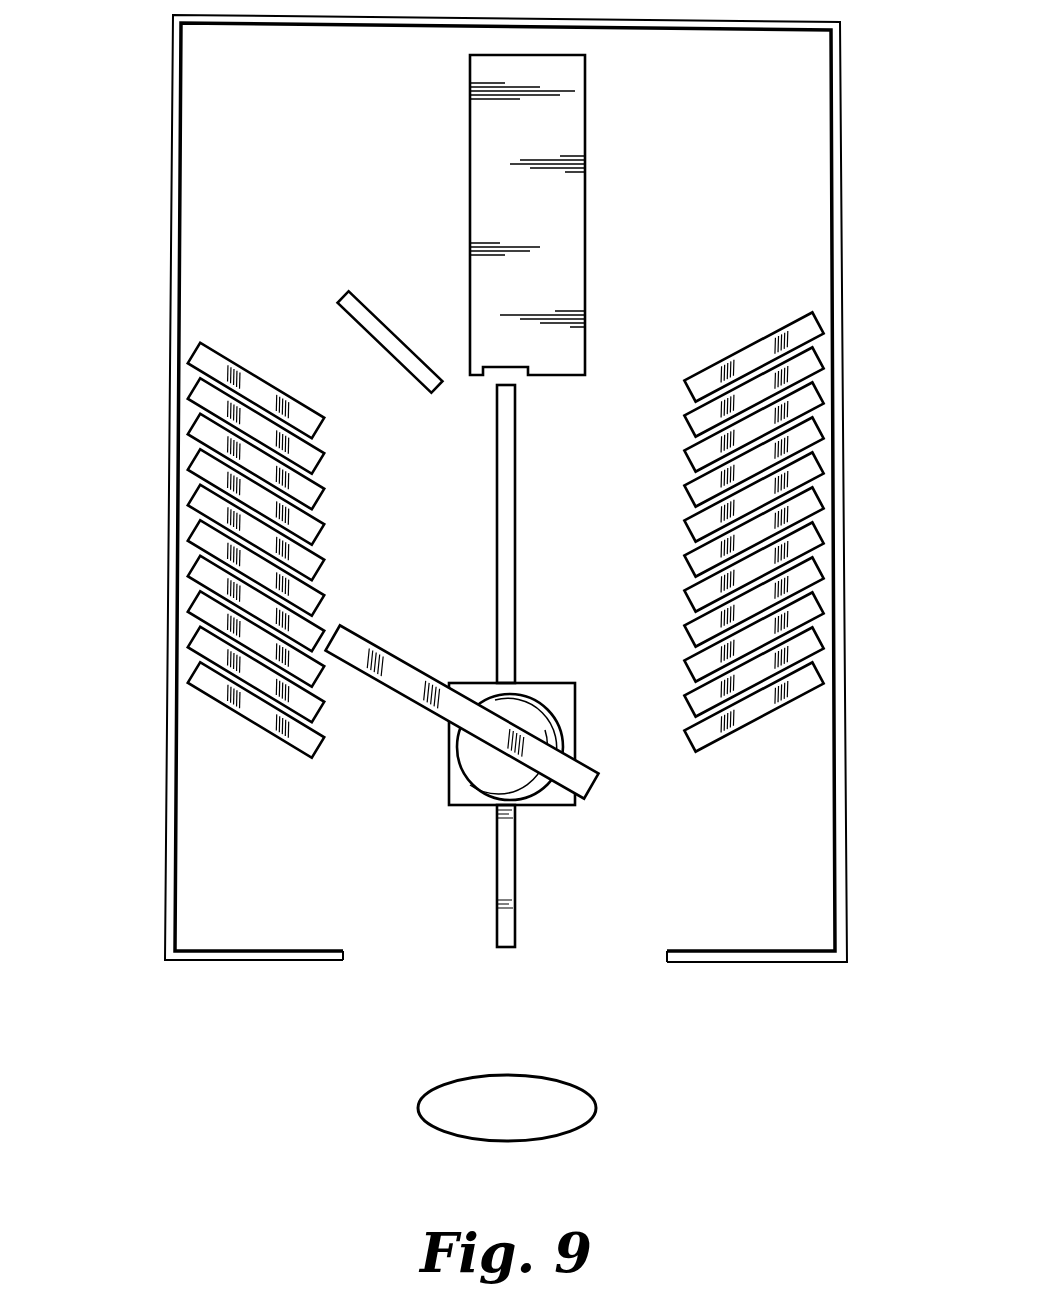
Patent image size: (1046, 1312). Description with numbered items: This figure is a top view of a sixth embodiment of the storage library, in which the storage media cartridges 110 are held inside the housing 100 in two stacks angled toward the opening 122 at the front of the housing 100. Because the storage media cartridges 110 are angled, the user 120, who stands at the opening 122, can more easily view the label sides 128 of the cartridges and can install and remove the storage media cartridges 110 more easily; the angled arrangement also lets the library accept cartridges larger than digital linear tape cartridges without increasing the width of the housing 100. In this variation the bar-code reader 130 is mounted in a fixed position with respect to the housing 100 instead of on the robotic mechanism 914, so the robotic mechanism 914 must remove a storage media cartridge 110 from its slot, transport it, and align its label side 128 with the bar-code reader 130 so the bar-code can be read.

The housing 100 is at (163, 275).
The storage media cartridges 110 is at (155, 330).
The user 120 is at (597, 1105).
The opening 122 is at (588, 965).
The label side 128 is at (325, 430).
The bar-code reader 130 is at (388, 322).
The robotic mechanism 914 is at (460, 822).